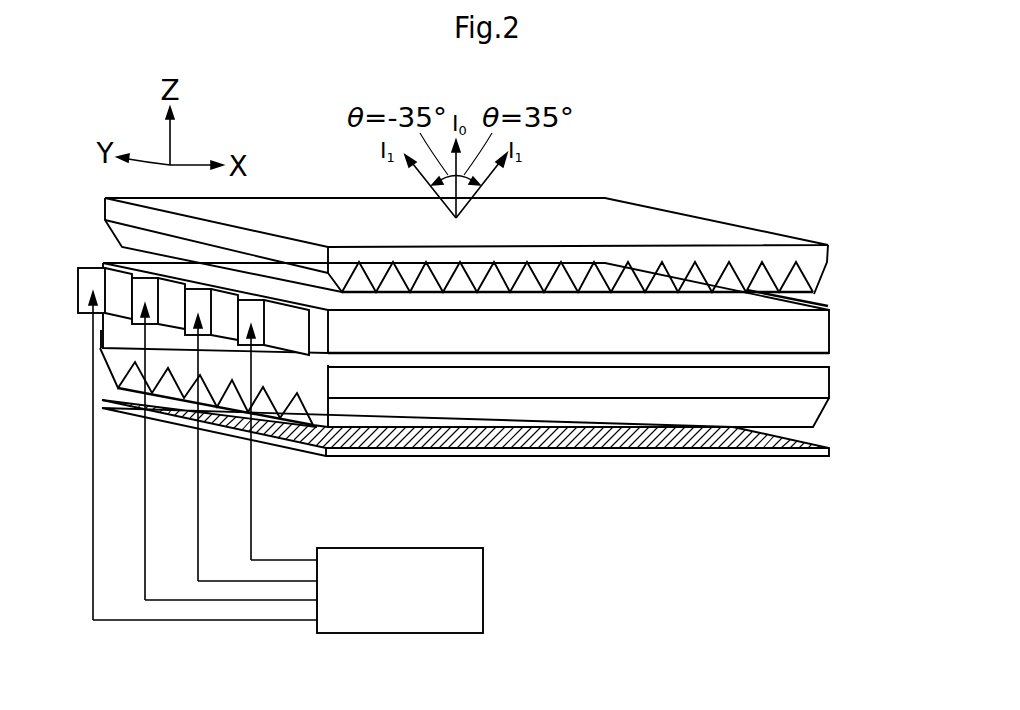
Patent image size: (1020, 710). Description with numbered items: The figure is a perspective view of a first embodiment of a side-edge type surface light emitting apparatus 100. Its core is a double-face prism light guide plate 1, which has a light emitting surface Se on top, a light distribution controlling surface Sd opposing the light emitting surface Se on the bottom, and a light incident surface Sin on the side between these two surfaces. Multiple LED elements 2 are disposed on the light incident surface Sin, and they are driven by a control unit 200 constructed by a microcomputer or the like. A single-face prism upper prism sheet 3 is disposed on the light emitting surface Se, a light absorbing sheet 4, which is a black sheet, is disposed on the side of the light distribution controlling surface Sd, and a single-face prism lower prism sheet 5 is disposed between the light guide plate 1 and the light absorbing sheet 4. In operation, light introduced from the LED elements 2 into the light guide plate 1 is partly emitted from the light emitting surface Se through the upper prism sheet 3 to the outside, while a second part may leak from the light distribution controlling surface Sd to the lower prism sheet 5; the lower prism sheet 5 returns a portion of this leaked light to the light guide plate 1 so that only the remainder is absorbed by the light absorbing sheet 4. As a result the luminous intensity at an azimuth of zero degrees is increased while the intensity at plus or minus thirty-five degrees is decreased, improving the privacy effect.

The side-edge type surface light emitting apparatus 100 is at (673, 182).
The upper prism sheet 3 is at (832, 250).
The light guide plate 1 is at (505, 374).
The lower prism sheet 5 is at (831, 380).
The light absorbing sheet 4 is at (831, 452).
The LED elements 2 is at (237, 323).
The control unit 200 is at (485, 565).
The light emitting surface Se is at (793, 296).
The light distribution controlling surface Sd is at (803, 359).
The light incident surface Sin is at (317, 333).